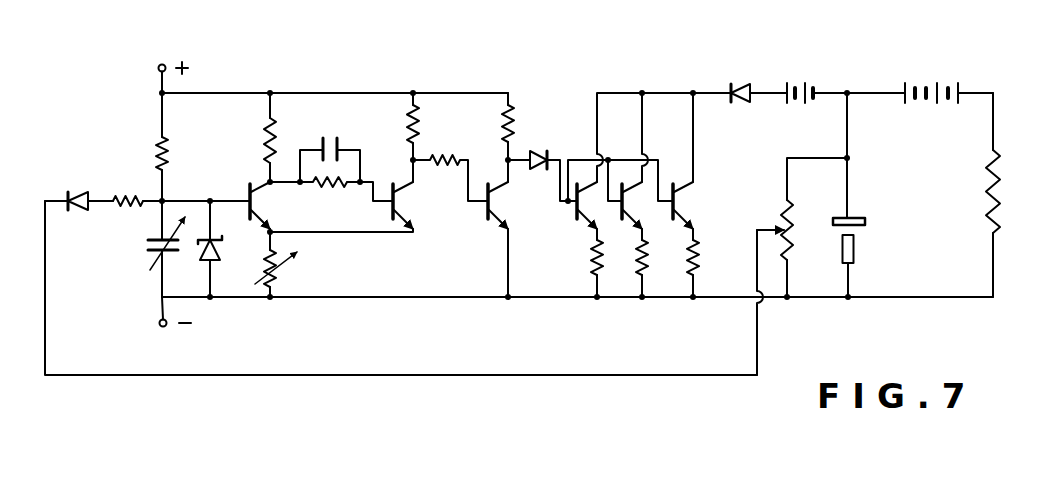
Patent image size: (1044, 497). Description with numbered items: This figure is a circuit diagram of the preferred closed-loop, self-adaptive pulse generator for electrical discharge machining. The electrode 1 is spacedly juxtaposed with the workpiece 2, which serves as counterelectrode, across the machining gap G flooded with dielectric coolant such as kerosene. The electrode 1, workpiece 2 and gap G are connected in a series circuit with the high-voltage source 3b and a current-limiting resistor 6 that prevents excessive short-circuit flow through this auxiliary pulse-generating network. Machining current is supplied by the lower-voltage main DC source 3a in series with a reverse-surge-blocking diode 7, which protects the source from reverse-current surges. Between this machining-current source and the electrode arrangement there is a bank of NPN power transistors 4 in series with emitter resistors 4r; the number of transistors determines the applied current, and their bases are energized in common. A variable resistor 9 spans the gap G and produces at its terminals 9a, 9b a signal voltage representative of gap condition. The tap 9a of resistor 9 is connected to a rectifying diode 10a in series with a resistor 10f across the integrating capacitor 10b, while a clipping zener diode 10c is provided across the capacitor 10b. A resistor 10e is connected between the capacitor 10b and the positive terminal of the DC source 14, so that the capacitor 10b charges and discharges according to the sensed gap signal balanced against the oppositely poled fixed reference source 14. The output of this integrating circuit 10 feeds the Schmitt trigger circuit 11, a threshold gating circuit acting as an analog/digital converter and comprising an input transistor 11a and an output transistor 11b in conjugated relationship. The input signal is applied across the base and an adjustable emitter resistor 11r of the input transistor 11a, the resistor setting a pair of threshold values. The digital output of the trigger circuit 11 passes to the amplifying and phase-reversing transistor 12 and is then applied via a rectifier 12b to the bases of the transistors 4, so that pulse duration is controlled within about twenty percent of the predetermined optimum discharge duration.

The electrode 1 is at (858, 217).
The workpiece 2 is at (854, 258).
The machining gap G is at (868, 235).
The main DC source 3a is at (806, 85).
The high-voltage source 3b is at (937, 87).
The NPN power transistors 4 is at (687, 213).
The emitter resistors 4r is at (700, 257).
The current-limiting resistor 6 is at (1000, 208).
The surge-blocking rectifier diode 7 is at (741, 87).
The variable resistor 9 is at (790, 247).
The tap 9a is at (757, 229).
The terminus 9b is at (786, 303).
The integrating circuit 10 is at (117, 295).
The rectifying diode 10a is at (80, 211).
The integrating capacitor 10b is at (160, 237).
The clipping zener diode 10c is at (208, 262).
The resistor 10e is at (168, 152).
The resistor 10f is at (126, 194).
The Schmitt trigger circuit 11 is at (345, 71).
The input transistor 11a is at (262, 207).
The output transistor 11b is at (412, 210).
The emitter resistor 11r is at (276, 289).
The amplifying transistor 12 is at (498, 208).
The rectifier 12b is at (533, 149).
The DC source 14 is at (146, 326).